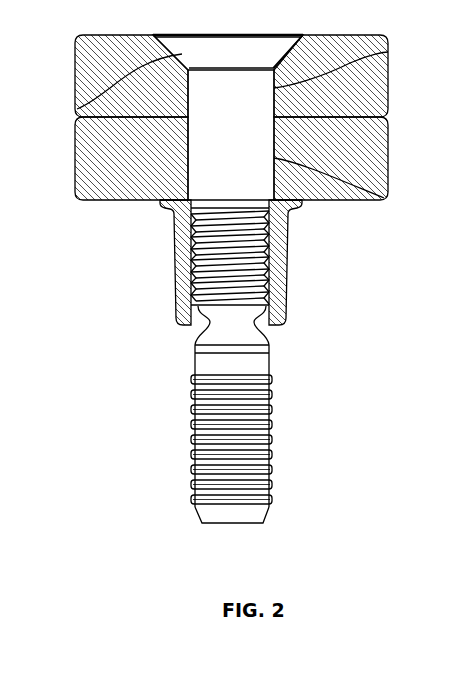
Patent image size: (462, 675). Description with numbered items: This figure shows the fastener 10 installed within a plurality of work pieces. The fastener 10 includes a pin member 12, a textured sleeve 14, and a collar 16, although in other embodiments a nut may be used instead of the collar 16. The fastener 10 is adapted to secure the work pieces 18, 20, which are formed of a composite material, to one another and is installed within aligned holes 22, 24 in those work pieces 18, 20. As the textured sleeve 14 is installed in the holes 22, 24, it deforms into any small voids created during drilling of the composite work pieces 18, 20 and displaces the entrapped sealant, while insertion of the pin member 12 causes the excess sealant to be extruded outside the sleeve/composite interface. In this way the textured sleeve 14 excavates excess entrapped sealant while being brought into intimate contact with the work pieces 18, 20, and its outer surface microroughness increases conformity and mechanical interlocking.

The fastener 10 is at (313, 317).
The pin member 12 is at (222, 168).
The textured sleeve 14 is at (77, 109).
The collar 16 is at (182, 299).
The work piece 18 is at (383, 78).
The work piece 20 is at (382, 152).
The hole 22 is at (388, 52).
The hole 24 is at (384, 198).